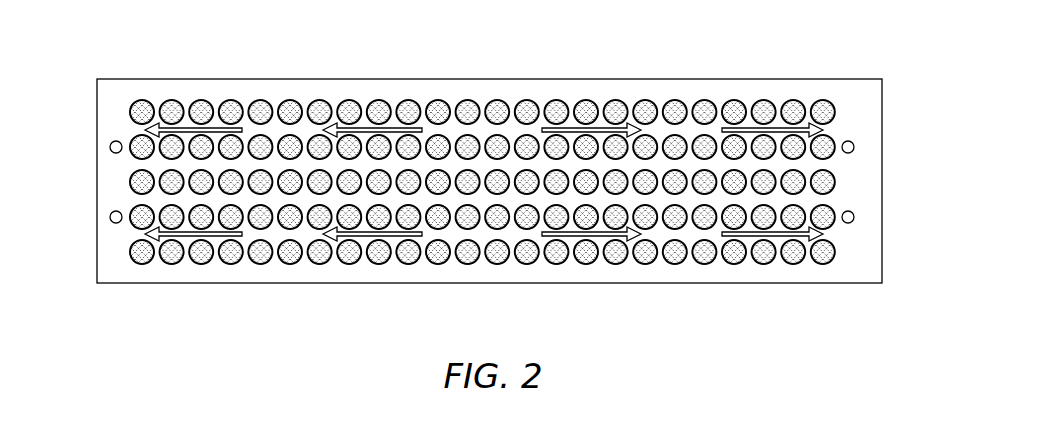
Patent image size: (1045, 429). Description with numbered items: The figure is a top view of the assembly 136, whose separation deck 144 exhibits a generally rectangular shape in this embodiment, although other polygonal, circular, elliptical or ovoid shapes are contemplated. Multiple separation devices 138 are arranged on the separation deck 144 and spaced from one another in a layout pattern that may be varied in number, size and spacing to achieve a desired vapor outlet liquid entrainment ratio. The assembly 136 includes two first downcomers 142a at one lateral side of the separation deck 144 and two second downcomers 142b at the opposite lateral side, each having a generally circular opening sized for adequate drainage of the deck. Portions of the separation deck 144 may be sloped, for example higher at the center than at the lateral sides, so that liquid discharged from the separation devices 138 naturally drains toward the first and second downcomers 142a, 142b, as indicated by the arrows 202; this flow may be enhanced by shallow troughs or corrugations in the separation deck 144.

The assembly 136 is at (158, 38).
The separation devices 138 is at (467, 100).
The first downcomers 142a is at (111, 213).
The second downcomers 142b is at (853, 213).
The separation deck 144 is at (527, 79).
The arrows 202 is at (338, 132).